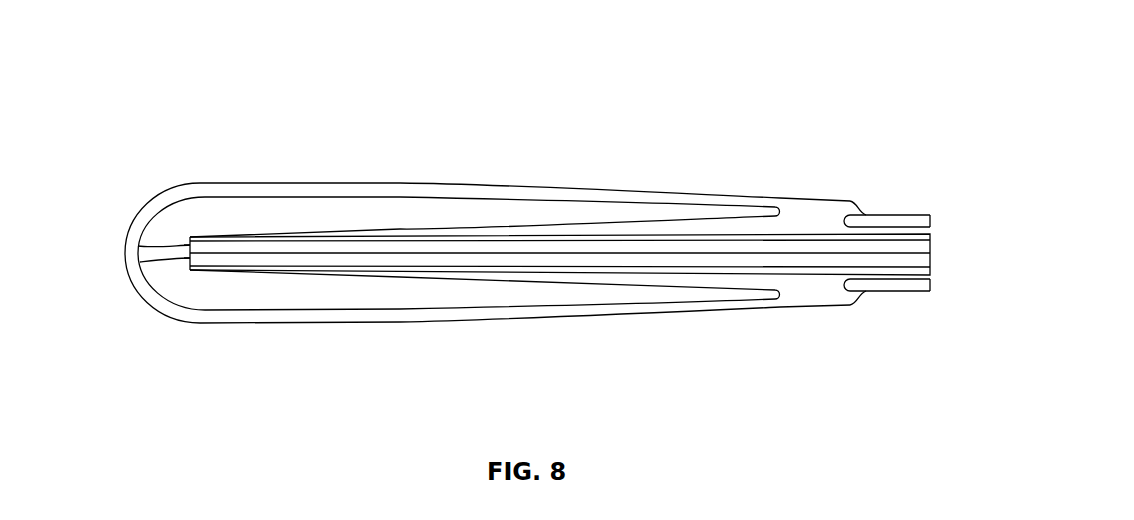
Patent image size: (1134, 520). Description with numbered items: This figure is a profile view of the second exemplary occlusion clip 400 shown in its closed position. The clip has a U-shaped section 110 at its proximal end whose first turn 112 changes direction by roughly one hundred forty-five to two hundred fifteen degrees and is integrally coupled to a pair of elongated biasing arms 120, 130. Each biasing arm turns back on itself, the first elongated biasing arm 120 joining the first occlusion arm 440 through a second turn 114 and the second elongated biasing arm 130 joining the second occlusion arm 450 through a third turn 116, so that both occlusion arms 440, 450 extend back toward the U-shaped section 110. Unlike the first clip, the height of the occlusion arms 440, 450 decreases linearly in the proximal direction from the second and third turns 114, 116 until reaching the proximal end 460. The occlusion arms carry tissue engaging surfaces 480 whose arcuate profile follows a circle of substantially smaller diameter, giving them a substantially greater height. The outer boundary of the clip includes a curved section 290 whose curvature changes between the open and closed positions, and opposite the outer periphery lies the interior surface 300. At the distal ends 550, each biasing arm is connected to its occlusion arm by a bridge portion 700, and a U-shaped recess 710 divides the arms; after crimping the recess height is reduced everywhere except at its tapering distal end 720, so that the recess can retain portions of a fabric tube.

The second exemplary occlusion clip 400 is at (885, 83).
The U-shaped section 110 is at (157, 302).
The first turn 112 is at (130, 238).
The first elongated biasing arm 120 is at (345, 185).
The second elongated biasing arm 130 is at (278, 322).
The curved section 290 is at (144, 300).
The interior surface 300 is at (148, 270).
The first occlusion arm 440 is at (686, 232).
The second occlusion arm 450 is at (532, 273).
The proximal end 460 is at (190, 246).
The tissue engaging surfaces 480 is at (508, 245).
The second turn 114 is at (781, 205).
The third turn 116 is at (789, 300).
The distal ends 550 is at (930, 212).
The bridge portion 700 is at (815, 210).
The U-shaped recess 710 is at (931, 225).
The distal end of U-shaped recess 720 is at (840, 218).